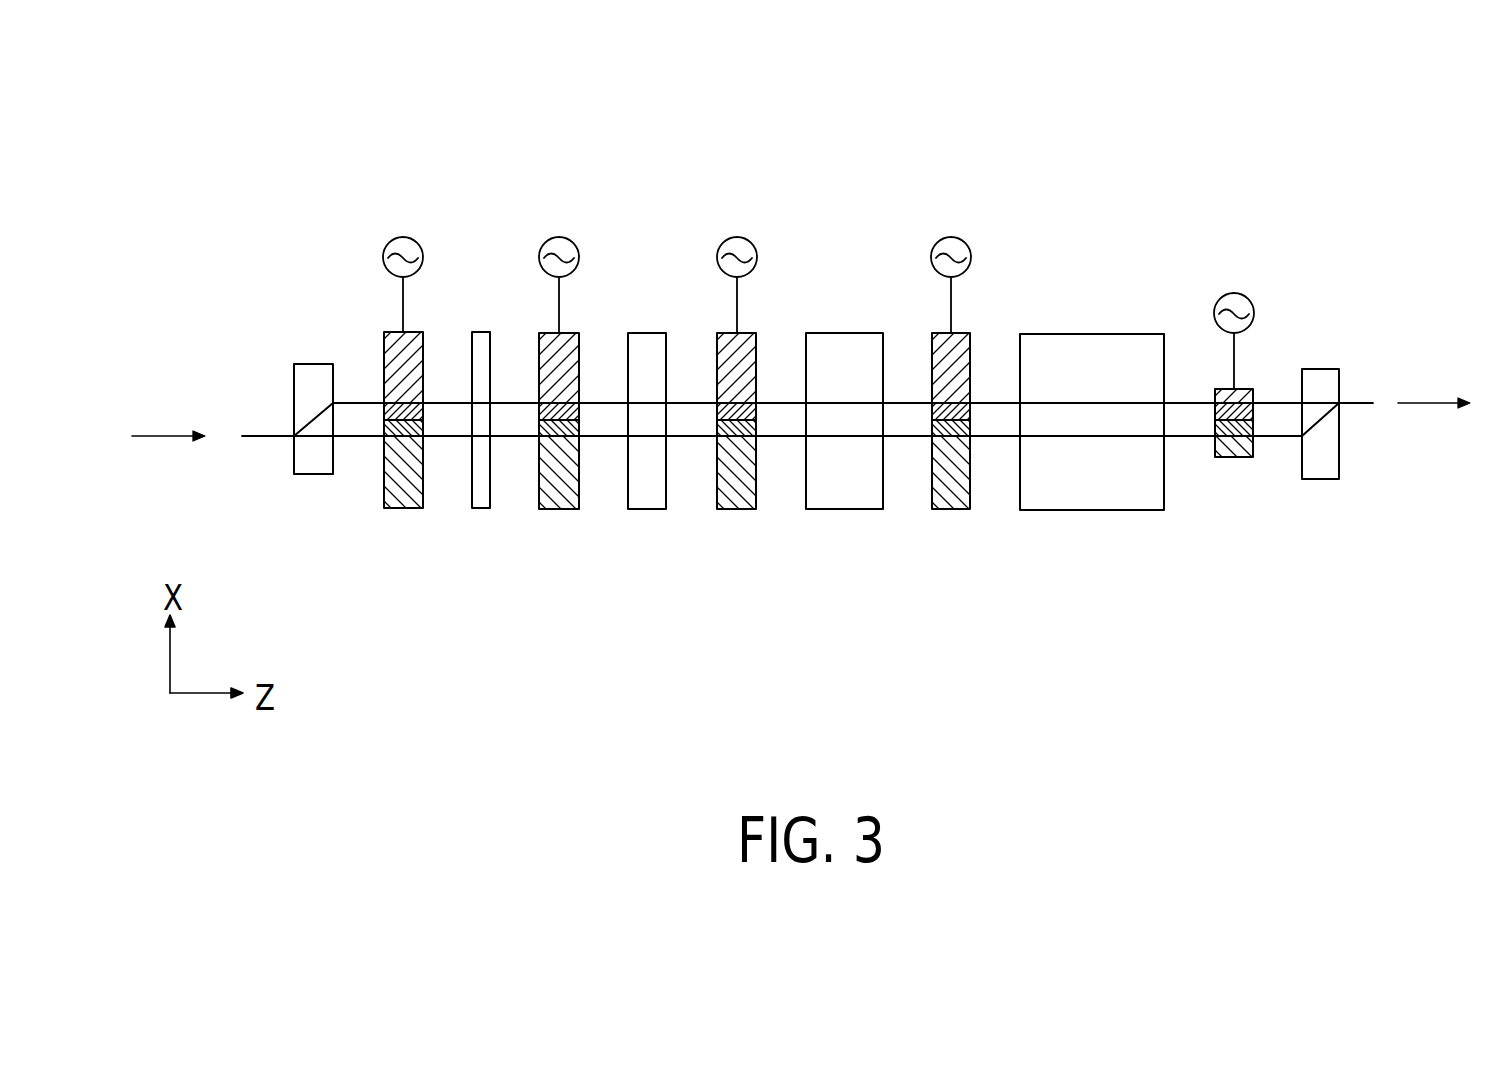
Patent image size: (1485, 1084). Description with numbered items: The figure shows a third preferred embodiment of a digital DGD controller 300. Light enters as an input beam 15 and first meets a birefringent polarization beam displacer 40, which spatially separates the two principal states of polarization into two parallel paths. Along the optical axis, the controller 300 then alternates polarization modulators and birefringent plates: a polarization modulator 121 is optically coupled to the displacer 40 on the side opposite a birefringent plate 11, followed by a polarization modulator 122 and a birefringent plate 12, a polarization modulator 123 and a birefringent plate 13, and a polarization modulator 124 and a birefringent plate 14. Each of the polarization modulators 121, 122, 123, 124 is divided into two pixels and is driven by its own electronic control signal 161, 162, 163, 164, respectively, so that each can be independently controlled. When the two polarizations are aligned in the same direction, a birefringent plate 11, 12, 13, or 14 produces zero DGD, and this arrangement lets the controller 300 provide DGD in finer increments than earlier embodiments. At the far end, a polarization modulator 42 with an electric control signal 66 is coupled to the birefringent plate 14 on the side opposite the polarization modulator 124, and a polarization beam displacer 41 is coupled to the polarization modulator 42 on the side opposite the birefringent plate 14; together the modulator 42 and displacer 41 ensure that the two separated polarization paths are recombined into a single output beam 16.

The digital DGD controller 300 is at (832, 763).
The input beam 15 is at (162, 436).
The output beam 16 is at (1428, 403).
The birefringent polarization beam displacer 40 is at (315, 474).
The polarization beam displacer 41 is at (1316, 479).
The polarization modulator 42 is at (1240, 457).
The birefringent plate 11 is at (480, 332).
The birefringent plate 12 is at (647, 333).
The birefringent plate 13 is at (842, 333).
The birefringent plate 14 is at (1057, 334).
The polarization modulator 121 is at (400, 508).
The polarization modulator 122 is at (557, 509).
The polarization modulator 123 is at (735, 509).
The polarization modulator 124 is at (950, 509).
The electronic control signal 161 is at (394, 242).
The electronic control signal 162 is at (550, 242).
The electronic control signal 163 is at (728, 242).
The electronic control signal 164 is at (942, 242).
The electric control signal 66 is at (1226, 298).